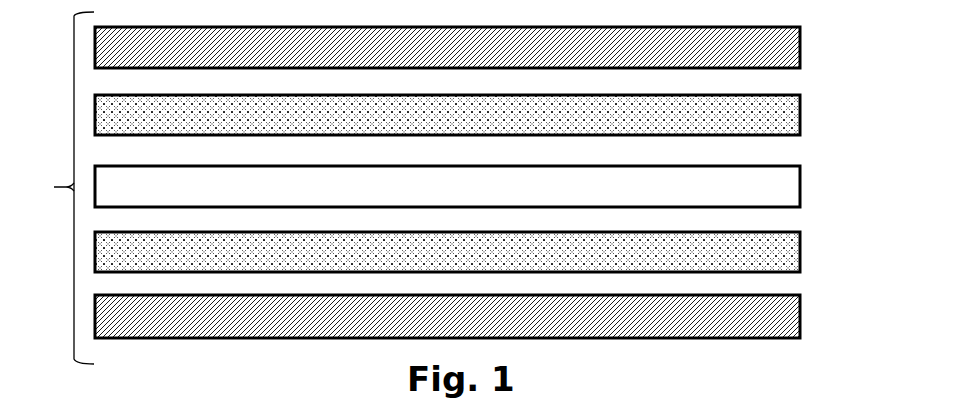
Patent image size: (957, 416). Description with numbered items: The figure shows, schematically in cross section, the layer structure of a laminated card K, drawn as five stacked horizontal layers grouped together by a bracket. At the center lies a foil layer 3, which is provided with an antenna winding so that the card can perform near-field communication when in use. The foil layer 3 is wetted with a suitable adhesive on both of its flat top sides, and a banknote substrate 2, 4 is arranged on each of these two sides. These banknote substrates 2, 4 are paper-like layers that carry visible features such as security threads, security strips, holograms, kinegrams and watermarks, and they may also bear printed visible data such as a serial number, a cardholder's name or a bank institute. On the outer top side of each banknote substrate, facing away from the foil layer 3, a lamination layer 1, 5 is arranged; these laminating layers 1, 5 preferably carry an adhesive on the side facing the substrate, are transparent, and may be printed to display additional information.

The laminated card K is at (55, 188).
The lamination layer 1 is at (800, 45).
The banknote substrate 2 is at (800, 115).
The foil layer 3 is at (800, 187).
The banknote substrate 4 is at (800, 254).
The lamination layer 5 is at (800, 317).